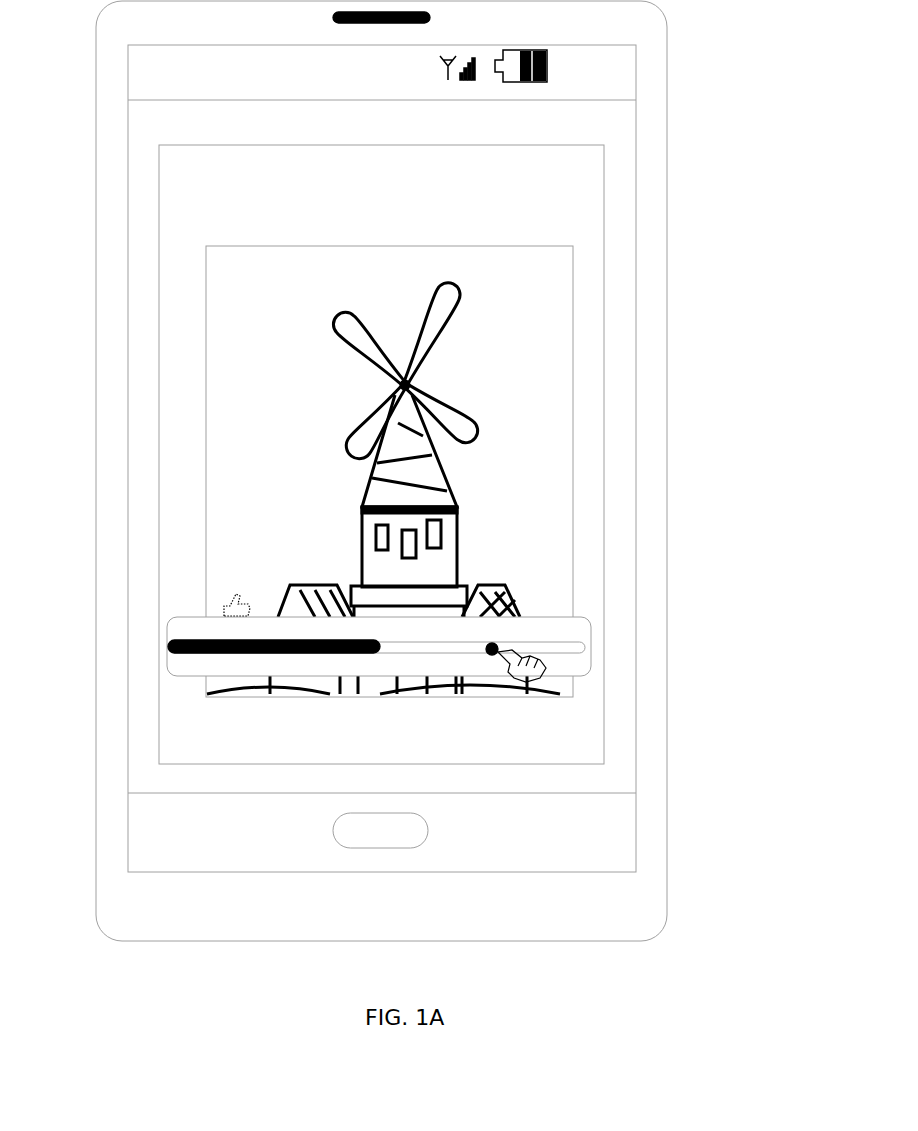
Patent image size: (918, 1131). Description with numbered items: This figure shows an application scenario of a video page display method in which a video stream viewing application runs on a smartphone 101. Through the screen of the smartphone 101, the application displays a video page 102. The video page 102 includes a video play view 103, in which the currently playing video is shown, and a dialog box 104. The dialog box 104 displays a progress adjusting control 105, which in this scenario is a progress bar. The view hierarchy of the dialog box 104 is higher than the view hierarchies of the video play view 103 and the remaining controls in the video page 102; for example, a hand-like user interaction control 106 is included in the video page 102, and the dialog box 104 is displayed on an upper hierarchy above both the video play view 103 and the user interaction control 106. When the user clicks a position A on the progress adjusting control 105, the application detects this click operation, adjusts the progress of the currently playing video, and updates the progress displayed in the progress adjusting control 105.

The smartphone 101 is at (667, 135).
The video page 102 is at (604, 312).
The video play view 103 is at (563, 435).
The dialog box 104 is at (582, 613).
The progress adjusting control 105 is at (578, 650).
The user interaction control 106 is at (232, 603).